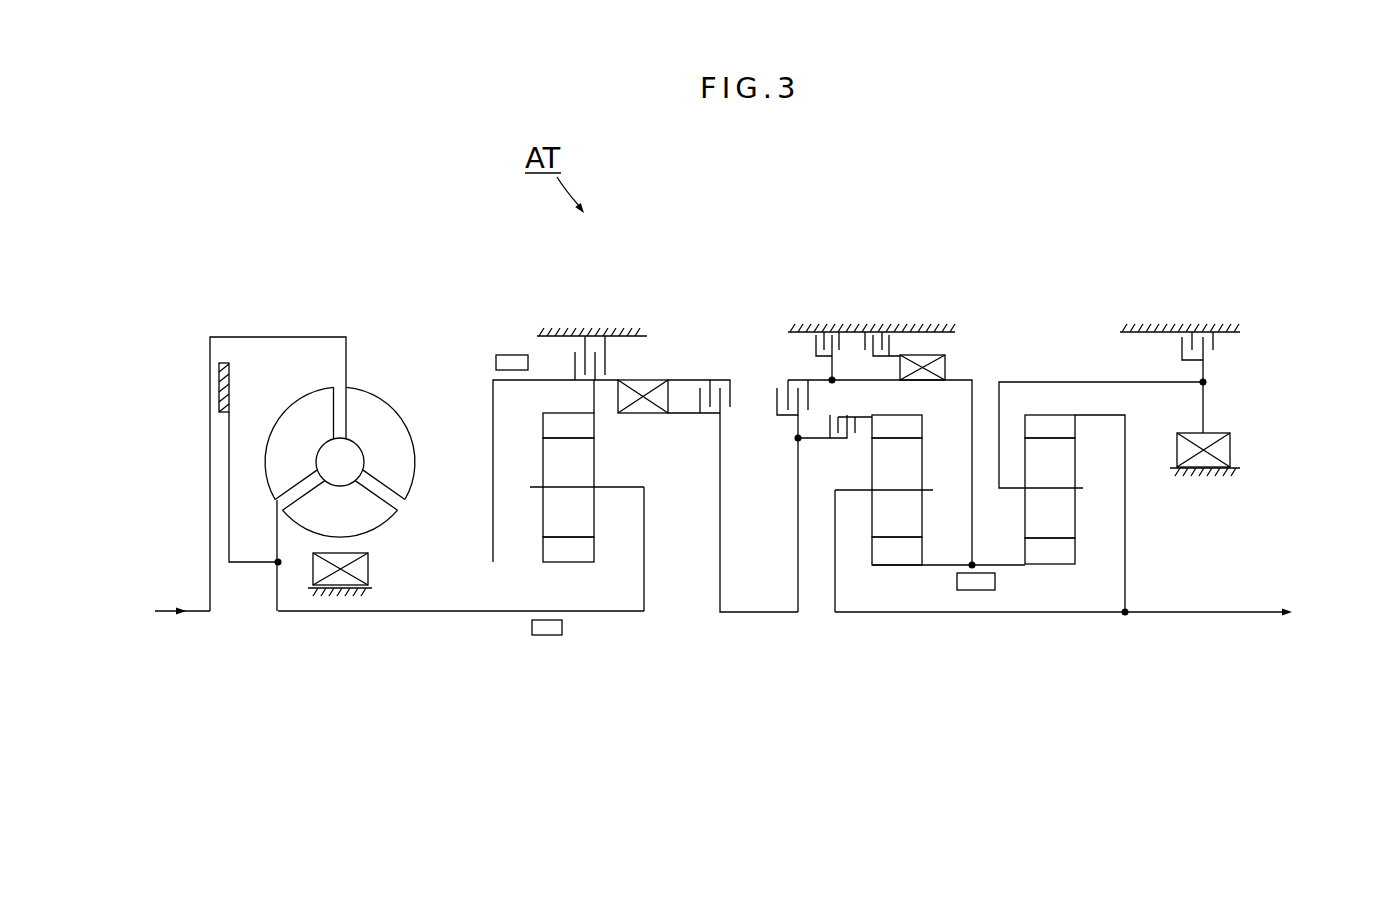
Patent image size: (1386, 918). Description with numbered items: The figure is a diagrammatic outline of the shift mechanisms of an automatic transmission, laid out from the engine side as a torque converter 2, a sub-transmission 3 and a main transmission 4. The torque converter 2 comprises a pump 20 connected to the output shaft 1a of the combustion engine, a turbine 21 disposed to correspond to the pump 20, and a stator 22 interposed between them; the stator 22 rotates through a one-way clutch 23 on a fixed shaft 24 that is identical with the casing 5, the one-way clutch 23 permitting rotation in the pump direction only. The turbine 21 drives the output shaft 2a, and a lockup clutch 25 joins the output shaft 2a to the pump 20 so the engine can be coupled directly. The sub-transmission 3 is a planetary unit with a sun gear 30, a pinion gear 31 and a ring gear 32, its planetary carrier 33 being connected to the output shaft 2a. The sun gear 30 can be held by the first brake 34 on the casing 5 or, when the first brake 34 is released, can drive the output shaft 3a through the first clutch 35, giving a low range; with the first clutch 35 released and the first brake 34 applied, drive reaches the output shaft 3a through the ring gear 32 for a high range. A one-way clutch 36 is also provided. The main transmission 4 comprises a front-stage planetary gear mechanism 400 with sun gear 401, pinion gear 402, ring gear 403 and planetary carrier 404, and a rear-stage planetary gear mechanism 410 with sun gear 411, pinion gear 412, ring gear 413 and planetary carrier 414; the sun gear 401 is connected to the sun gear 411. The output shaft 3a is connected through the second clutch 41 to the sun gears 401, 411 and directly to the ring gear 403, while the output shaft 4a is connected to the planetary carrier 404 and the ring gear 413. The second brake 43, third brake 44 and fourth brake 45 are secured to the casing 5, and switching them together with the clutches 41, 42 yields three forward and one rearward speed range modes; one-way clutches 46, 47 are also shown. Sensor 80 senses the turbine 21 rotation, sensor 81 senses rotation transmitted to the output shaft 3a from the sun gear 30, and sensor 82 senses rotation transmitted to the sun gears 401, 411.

The output shaft of the combustion engine 1a is at (172, 617).
The torque converter 2 is at (379, 307).
The output shaft of the torque converter 2a is at (395, 617).
The sub-transmission 3 is at (666, 282).
The output shaft of the sub-transmission 3a is at (745, 617).
The main transmission 4 is at (1123, 278).
The output shaft of the main transmission 4a is at (1210, 617).
The casing 5 is at (580, 334).
The pump 20 is at (396, 428).
The turbine 21 is at (305, 412).
The stator 22 is at (372, 520).
The one-way clutch 23 is at (368, 570).
The fixed shaft 24 is at (360, 592).
The lockup clutch 25 is at (231, 388).
The sun gear 30 is at (583, 550).
The pinion gear 31 is at (552, 467).
The ring gear 32 is at (582, 430).
The planetary carrier 33 is at (647, 557).
The first brake 34 is at (608, 353).
The first clutch 35 is at (705, 380).
The one-way clutch 36 is at (650, 410).
The second clutch 41 is at (777, 417).
The clutch 42 is at (848, 440).
The second brake 43 is at (875, 333).
The third brake 44 is at (1205, 332).
The fourth brake 45 is at (816, 333).
The one-way clutch 46 is at (1225, 447).
The one-way clutch 47 is at (946, 358).
The sensor 80 is at (545, 636).
The sensor 81 is at (503, 352).
The sensor 82 is at (972, 592).
The front-stage planetary gear mechanism 400 is at (831, 636).
The sun gear 401 is at (880, 555).
The pinion gear 402 is at (906, 474).
The ring gear 403 is at (888, 418).
The planetary carrier 404 is at (833, 566).
The rear-stage planetary gear mechanism 410 is at (1064, 640).
The sun gear 411 is at (1070, 552).
The pinion gear 412 is at (1063, 519).
The ring gear 413 is at (1078, 430).
The planetary carrier 414 is at (1000, 420).